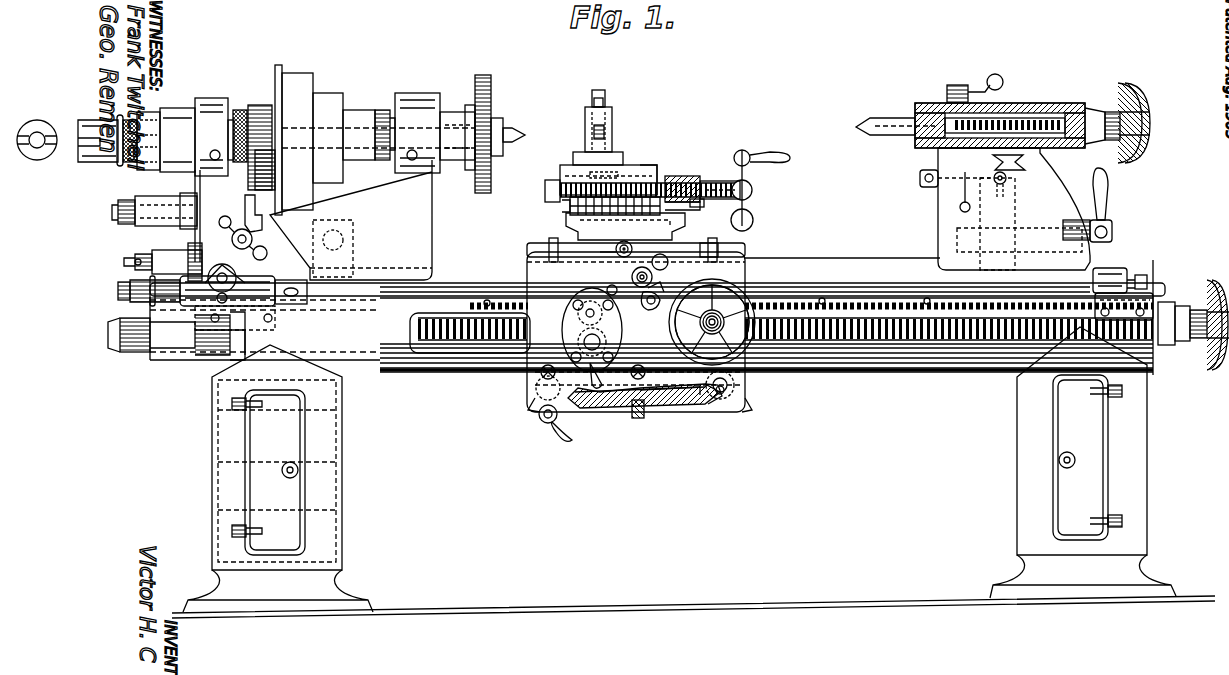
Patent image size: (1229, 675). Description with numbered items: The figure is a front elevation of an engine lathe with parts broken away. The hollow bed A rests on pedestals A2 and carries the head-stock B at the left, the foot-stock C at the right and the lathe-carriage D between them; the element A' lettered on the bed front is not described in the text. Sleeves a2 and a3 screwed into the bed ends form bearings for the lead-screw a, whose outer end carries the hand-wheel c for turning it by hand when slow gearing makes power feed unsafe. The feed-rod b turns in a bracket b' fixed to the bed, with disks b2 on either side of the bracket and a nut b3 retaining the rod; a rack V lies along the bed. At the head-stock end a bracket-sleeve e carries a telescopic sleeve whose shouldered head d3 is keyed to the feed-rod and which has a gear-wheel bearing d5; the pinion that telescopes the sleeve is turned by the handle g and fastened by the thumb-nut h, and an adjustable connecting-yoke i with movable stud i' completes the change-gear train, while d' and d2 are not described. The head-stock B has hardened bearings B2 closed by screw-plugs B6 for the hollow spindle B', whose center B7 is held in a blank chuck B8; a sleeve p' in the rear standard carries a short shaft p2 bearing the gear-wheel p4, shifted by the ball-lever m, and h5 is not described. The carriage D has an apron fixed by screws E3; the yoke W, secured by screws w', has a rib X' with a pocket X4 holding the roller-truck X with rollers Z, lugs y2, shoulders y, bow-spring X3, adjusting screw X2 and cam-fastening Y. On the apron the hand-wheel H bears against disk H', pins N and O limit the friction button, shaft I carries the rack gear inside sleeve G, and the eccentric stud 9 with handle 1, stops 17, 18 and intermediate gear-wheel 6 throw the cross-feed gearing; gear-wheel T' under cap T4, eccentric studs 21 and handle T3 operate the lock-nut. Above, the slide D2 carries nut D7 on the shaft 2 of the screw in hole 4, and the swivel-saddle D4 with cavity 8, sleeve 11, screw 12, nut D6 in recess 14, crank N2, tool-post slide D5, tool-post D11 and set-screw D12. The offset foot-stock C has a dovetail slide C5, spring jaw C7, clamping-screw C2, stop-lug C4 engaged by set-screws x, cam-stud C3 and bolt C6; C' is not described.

The bed A is at (662, 317).
The bed front rail A' is at (766, 364).
The pillars or pedestals A2 is at (679, 469).
The lead-screw a is at (781, 333).
The sleeve a2 is at (169, 343).
The sleeve a3 is at (1183, 312).
The hand-wheel c is at (1212, 330).
The feed-rod b is at (657, 280).
The bracket b' is at (1117, 274).
The disks b2 is at (1095, 302).
The nut b3 is at (1148, 272).
The rack V is at (811, 303).
The head-stock B is at (351, 220).
The lathe-spindle B' is at (464, 131).
The anti-friction bearings B2 is at (212, 105).
The screw-plug B6 is at (398, 165).
The center B7 is at (518, 132).
The blank chuck B8 is at (497, 118).
The thumb-nut h is at (250, 190).
The gear h5 is at (272, 170).
The sleeve p' is at (166, 198).
The short shaft p2 is at (200, 214).
The gear-wheel p4 is at (220, 220).
The ball-lever or handle m is at (251, 238).
The handle or thumb-piece g is at (240, 272).
The intermediate connecting-yoke i is at (215, 346).
The movable stud i' is at (163, 262).
The clutch d' is at (196, 300).
The clutch base d2 is at (247, 318).
The shouldered head d3 is at (262, 332).
The gear-wheel bearing d5 is at (132, 262).
The bracket-sleeve e is at (275, 302).
The screws E3 is at (630, 248).
The gear-wheel T' is at (581, 338).
The thumb-piece or handle T3 is at (624, 305).
The cap or cover T4 is at (616, 342).
The eccentric studs 21 is at (566, 312).
The short shaft or stud 9 is at (632, 278).
The stop 17 is at (640, 301).
The adjustable stop 18 is at (657, 303).
The hand-wheel H is at (712, 315).
The disk H' is at (702, 322).
The stop or pin N is at (701, 315).
The stop or pin O is at (722, 322).
The screws w' is at (591, 370).
The handle or thumb-piece 1 is at (660, 262).
The truck or frame X is at (644, 429).
The rib X' is at (640, 416).
The screw X2 is at (636, 420).
The bow-spring X3 is at (667, 410).
The recess or pocket X4 is at (692, 402).
The cam-fastening Y is at (540, 418).
The shoulders y is at (587, 410).
The overlapping lugs y2 is at (636, 408).
The rollers Z is at (537, 392).
The yoke W is at (735, 408).
The lathe-carriage D is at (733, 246).
The slide D2 is at (566, 226).
The swivel-saddle D4 is at (545, 186).
The tool-post slide D5 is at (652, 172).
The nut D6 is at (590, 190).
The nut D7 is at (706, 250).
The tool-post D11 is at (608, 130).
The offset set-screw D12 is at (604, 102).
The enlarged opening or hole 4 is at (610, 239).
The shaft 2 is at (603, 254).
The sleeve G is at (592, 207).
The intermediate gear-wheel 6 is at (543, 205).
The recess 14 is at (628, 186).
The screw 12 is at (682, 185).
The sleeve 11 is at (720, 180).
The cavity 8 is at (697, 212).
The shaft I is at (685, 214).
The crank-handle N2 is at (750, 200).
The foot-stock C is at (1003, 172).
The pin C' is at (937, 203).
The clamping-screw C2 is at (920, 180).
The cam-stud C3 is at (1112, 226).
The lug or stop C4 is at (1081, 194).
The dovetail slide C5 is at (994, 161).
The bolt C6 is at (1019, 224).
The spring-clamping jaw C7 is at (965, 155).
The set-screws x is at (1000, 190).